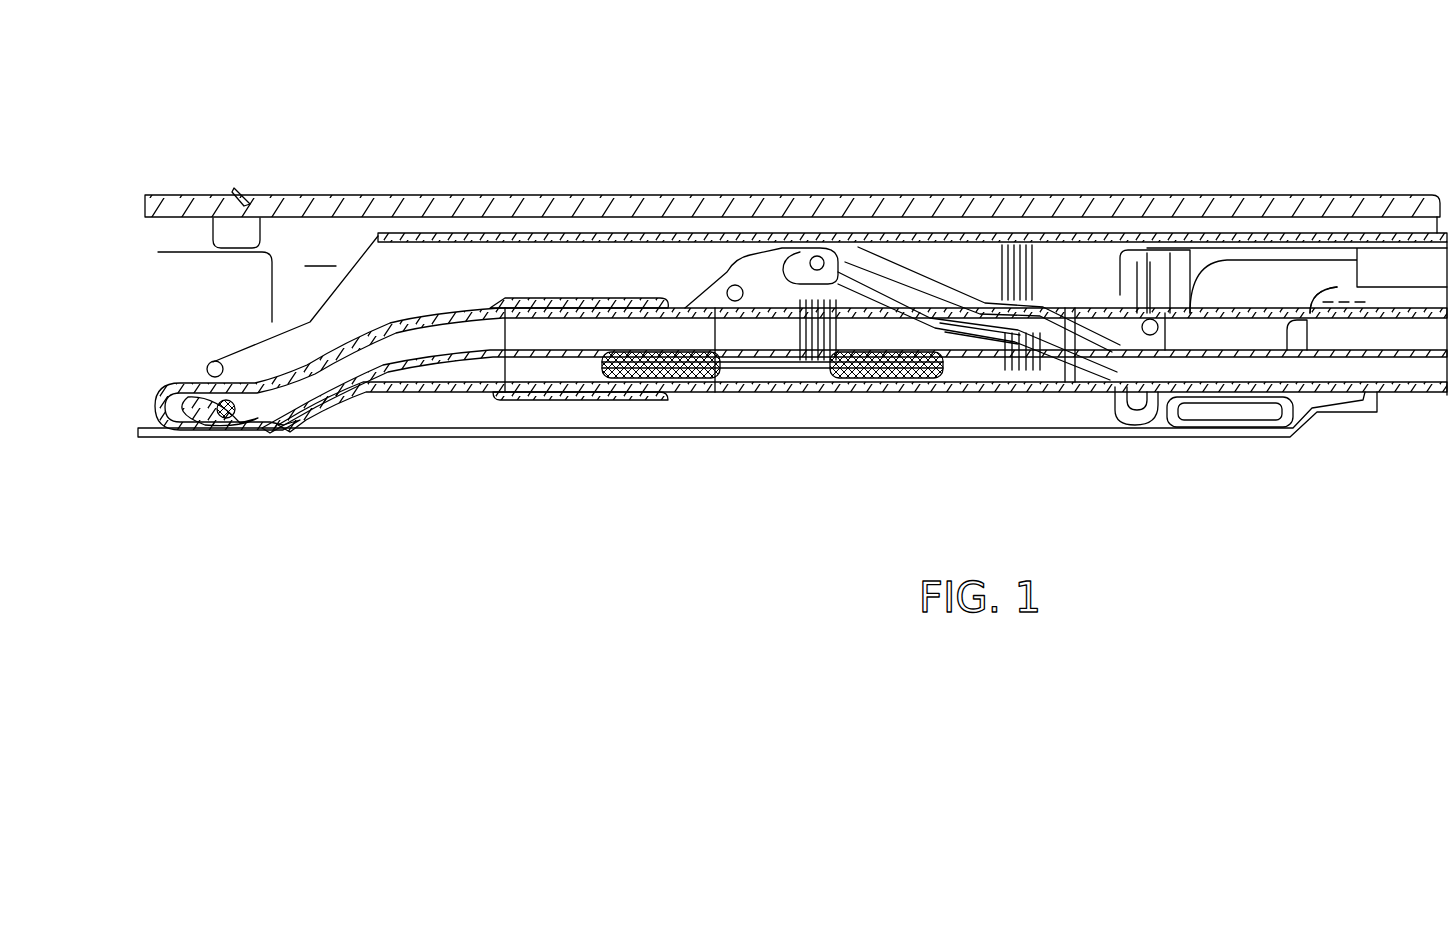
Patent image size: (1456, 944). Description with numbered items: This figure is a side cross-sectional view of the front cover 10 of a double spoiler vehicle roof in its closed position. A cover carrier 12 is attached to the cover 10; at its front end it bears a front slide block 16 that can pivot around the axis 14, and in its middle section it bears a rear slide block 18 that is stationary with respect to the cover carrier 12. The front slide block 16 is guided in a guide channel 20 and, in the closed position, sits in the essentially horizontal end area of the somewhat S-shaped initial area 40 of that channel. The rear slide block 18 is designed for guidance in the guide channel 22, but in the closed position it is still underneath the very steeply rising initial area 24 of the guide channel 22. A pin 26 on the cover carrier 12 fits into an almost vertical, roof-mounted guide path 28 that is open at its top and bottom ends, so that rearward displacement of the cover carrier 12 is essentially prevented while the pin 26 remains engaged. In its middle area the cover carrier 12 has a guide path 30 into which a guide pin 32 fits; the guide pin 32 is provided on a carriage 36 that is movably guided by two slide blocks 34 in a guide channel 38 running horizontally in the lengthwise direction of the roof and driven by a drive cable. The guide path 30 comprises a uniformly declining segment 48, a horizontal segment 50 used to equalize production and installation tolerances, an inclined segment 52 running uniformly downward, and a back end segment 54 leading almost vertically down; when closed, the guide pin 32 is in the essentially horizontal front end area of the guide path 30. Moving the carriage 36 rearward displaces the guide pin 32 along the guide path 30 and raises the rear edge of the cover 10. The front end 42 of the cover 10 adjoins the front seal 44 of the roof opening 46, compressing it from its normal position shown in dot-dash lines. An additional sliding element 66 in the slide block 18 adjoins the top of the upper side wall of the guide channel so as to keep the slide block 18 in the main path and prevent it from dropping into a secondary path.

The front cover 10 is at (632, 195).
The cover carrier 12 is at (672, 265).
The axis 14 is at (226, 430).
The front slide block 16 is at (196, 430).
The rear slide block 18 is at (1240, 418).
The guide channel 20 is at (563, 330).
The guide channel 22 is at (1398, 275).
The initial area 24 is at (1240, 327).
The pin 26 is at (1150, 280).
The roof-mounted guide path 28 is at (1160, 270).
The guide path 30 is at (883, 275).
The guide pin 32 is at (818, 256).
The slide blocks 34 is at (656, 378).
The carriage 36 is at (770, 362).
The guide channel 38 is at (982, 372).
The initial area 40 is at (340, 398).
The front end 42 is at (168, 195).
The front seal 44 is at (272, 195).
The roof opening 46 is at (320, 252).
The uniformly declining segment 48 is at (928, 270).
The horizontal segment 50 is at (983, 285).
The inclined segment 52 is at (1110, 307).
The back end segment 54 is at (1070, 392).
The sliding element 66 is at (213, 362).